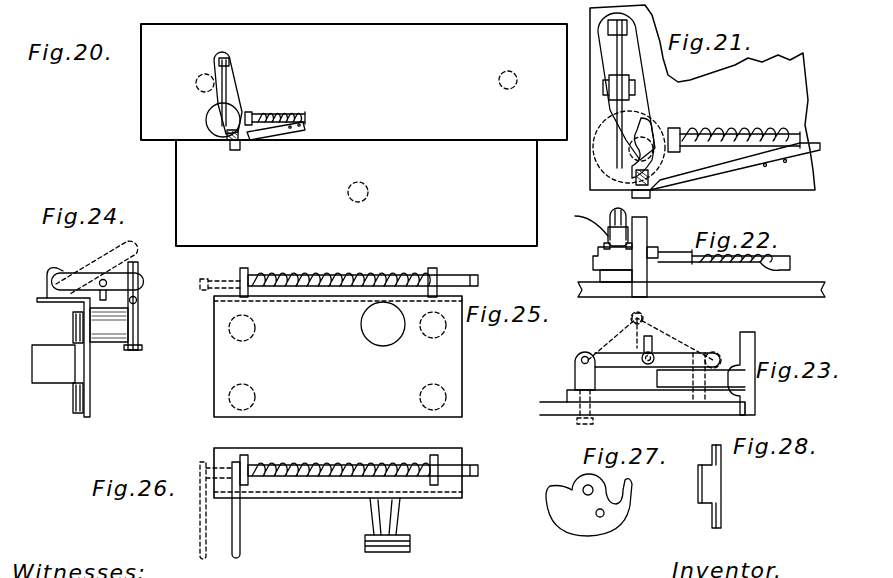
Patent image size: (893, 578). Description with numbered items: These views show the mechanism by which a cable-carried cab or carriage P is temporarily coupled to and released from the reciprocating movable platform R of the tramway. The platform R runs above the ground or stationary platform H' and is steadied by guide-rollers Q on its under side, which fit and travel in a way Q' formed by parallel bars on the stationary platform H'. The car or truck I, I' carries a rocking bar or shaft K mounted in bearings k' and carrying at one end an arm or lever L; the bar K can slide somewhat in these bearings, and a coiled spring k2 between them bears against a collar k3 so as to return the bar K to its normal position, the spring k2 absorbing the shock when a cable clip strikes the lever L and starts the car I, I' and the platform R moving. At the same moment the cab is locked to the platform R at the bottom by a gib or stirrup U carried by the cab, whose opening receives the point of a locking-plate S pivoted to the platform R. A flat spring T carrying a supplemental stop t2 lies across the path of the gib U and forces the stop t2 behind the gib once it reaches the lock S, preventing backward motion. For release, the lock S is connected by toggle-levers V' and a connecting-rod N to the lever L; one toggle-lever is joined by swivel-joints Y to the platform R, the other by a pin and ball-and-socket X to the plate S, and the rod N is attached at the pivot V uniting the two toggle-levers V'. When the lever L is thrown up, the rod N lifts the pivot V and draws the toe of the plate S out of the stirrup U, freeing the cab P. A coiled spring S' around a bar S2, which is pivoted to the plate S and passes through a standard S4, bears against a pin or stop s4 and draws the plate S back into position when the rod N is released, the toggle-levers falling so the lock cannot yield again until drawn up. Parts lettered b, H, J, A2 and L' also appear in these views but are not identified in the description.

In FIG. 20, the platform R is at (354, 82).
In FIG. 21, the platform R is at (702, 97).
In FIG. 20, the cab or carriage P is at (356, 193).
In FIG. 20, the guide-rollers Q is at (193, 83).
In FIG. 20, the way Q' is at (521, 80).
In FIG. 20, the hole b is at (354, 198).
In FIG. 20, the locking-plate S is at (212, 94).
In FIG. 21, the locking-plate S is at (629, 143).
In FIG. 22, the locking-plate S is at (706, 258).
In FIG. 23, the locking-plate S is at (701, 377).
In FIG. 27, the locking-plate S is at (589, 495).
In FIG. 20, the bar S2 is at (228, 138).
In FIG. 21, the bar S2 is at (784, 109).
In FIG. 21, the coiled spring S' is at (734, 132).
In FIG. 21, the standard S4 is at (672, 138).
In FIG. 21, the pin or stop s4 is at (792, 130).
In FIG. 22, the pin or stop s4 is at (791, 252).
In FIG. 27, the pin or stop s4 is at (628, 481).
In FIG. 20, the flat spring T is at (270, 138).
In FIG. 21, the flat spring T is at (710, 172).
In FIG. 22, the flat spring T is at (701, 280).
In FIG. 20, the supplemental stop t2 is at (238, 136).
In FIG. 21, the supplemental stop t2 is at (648, 177).
In FIG. 20, the gib or stirrup U is at (235, 150).
In FIG. 21, the gib or stirrup U is at (650, 196).
In FIG. 22, the gib or stirrup U is at (647, 224).
In FIG. 23, the gib or stirrup U is at (755, 340).
In FIG. 28, the gib or stirrup U is at (718, 486).
In FIG. 21, the stationary platform H' is at (713, 7).
In FIG. 21, the swivel-joints Y is at (627, 32).
In FIG. 23, the swivel-joints Y is at (585, 376).
In FIG. 21, the pivot V is at (634, 90).
In FIG. 22, the pivot V is at (594, 222).
In FIG. 23, the pivot V is at (657, 349).
In FIG. 21, the toggle-levers V' is at (619, 86).
In FIG. 22, the toggle-levers V' is at (648, 313).
In FIG. 23, the toggle-levers V' is at (650, 330).
In FIG. 21, the pin and ball and socket X is at (625, 158).
In FIG. 22, the pin and ball and socket X is at (604, 246).
In FIG. 23, the pin and ball and socket X is at (716, 352).
In FIG. 27, the pin and ball and socket X is at (603, 516).
In FIG. 22, the connecting-rod N is at (613, 224).
In FIG. 24, the car I is at (72, 342).
In FIG. 25, the car I is at (338, 356).
In FIG. 26, the car I is at (338, 483).
In FIG. 24, the car I' is at (61, 362).
In FIG. 25, the car I' is at (337, 361).
In FIG. 24, the pulley J is at (138, 324).
In FIG. 25, the pulley J is at (383, 324).
In FIG. 26, the pulley J is at (388, 552).
In FIG. 24, the box H is at (53, 364).
In FIG. 24, the rod A2 is at (138, 300).
In FIG. 24, the lever L is at (98, 284).
In FIG. 25, the lever L is at (256, 257).
In FIG. 26, the lever L is at (245, 510).
In FIG. 24, the handle alternate position L' is at (97, 267).
In FIG. 25, the handle alternate position L' is at (218, 271).
In FIG. 26, the handle alternate position L' is at (202, 510).
In FIG. 24, the bearings k' is at (49, 259).
In FIG. 25, the bearings k' is at (345, 271).
In FIG. 26, the bearings k' is at (348, 456).
In FIG. 25, the rocking bar K is at (348, 275).
In FIG. 26, the rocking bar K is at (332, 465).
In FIG. 25, the coiled spring k2 is at (318, 286).
In FIG. 26, the coiled spring k2 is at (375, 465).
In FIG. 25, the collar k3 is at (416, 268).